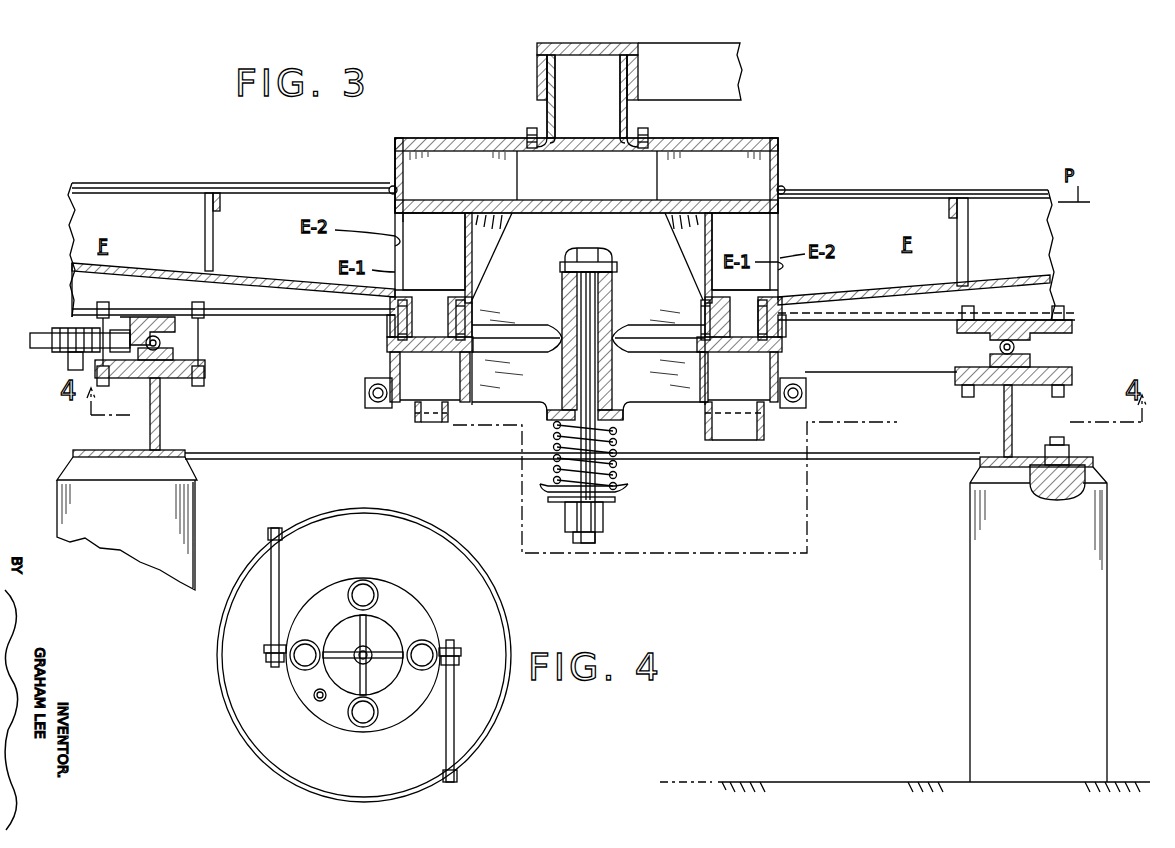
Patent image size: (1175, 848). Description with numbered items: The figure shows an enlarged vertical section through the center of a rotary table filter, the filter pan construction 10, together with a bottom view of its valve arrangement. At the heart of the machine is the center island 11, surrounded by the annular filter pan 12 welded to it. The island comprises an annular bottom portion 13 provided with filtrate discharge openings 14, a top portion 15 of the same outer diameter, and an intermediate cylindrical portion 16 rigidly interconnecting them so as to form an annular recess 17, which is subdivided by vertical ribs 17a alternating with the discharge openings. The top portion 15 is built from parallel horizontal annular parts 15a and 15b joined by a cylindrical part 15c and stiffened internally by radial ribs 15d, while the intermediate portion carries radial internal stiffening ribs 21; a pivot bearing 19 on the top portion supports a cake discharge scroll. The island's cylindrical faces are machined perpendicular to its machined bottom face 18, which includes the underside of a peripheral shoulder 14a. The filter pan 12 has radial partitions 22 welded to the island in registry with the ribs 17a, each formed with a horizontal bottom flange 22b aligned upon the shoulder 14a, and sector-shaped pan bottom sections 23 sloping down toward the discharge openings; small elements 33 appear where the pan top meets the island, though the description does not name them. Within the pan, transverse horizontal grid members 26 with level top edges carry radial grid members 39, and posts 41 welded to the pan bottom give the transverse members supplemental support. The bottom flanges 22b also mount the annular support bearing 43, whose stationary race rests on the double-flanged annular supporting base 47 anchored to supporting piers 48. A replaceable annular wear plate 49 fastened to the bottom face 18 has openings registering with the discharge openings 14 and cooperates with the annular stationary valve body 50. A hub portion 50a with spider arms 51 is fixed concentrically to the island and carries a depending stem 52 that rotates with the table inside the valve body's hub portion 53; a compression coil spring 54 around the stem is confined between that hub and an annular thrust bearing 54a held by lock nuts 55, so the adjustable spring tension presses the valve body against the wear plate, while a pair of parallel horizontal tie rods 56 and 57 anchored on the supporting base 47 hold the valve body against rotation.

In FIG. 3, the rotary filter table or filter pan construction 10 is at (240, 162).
In FIG. 3, the center island 11 is at (493, 97).
In FIG. 3, the annular filter pan 12 is at (54, 222).
In FIG. 3, the annular bottom portion 13 is at (393, 302).
In FIG. 3, the filtrate discharge openings 14 is at (428, 300).
In FIG. 3, the machined peripheral shoulder 14a is at (393, 320).
In FIG. 3, the top portion 15 is at (455, 124).
In FIG. 3, the horizontal annular part 15a is at (419, 137).
In FIG. 3, the horizontal annular part 15b is at (440, 200).
In FIG. 3, the cylindrical part 15c is at (395, 168).
In FIG. 3, the radial ribs 15d is at (657, 190).
In FIG. 3, the intermediate cylindrical portion 16 is at (466, 266).
In FIG. 3, the annular recess 17 is at (586, 256).
In FIG. 3, the vertical ribs 17a is at (400, 222).
In FIG. 3, the machined bottom face 18 is at (430, 377).
In FIG. 3, the pivot bearing 19 is at (628, 114).
In FIG. 3, the radial internal stiffening ribs 21 is at (500, 232).
In FIG. 3, the radial partitions 22 is at (123, 264).
In FIG. 3, the horizontal bottom flange 22b is at (166, 349).
In FIG. 3, the sector-shaped pan bottom sections 23 is at (166, 275).
In FIG. 3, the transverse horizontal grid members 26 is at (220, 205).
In FIG. 3, the seal 33 is at (389, 190).
In FIG. 3, the radial grid members 39 is at (277, 193).
In FIG. 3, the posts 41 is at (213, 240).
In FIG. 3, the annular support bearing 43 is at (961, 350).
In FIG. 3, the annular supporting base 47 is at (160, 422).
In FIG. 4, the annular supporting base 47 is at (340, 509).
In FIG. 3, the supporting piers 48 is at (160, 505).
In FIG. 3, the replaceable annular wear plate 49 is at (388, 342).
In FIG. 3, the annular stationary valve body 50 is at (418, 422).
In FIG. 3, the hub portion 50a is at (568, 286).
In FIG. 3, the spider arms 51 is at (527, 305).
In FIG. 3, the depending stem 52 is at (581, 360).
In FIG. 3, the hub portion 53 is at (608, 375).
In FIG. 3, the compression coil spring 54 is at (612, 445).
In FIG. 3, the annular thrust bearing 54a is at (625, 496).
In FIG. 3, the lock nuts 55 is at (603, 518).
In FIG. 4, the tie rod 56 is at (280, 578).
In FIG. 4, the tie rod 57 is at (446, 738).